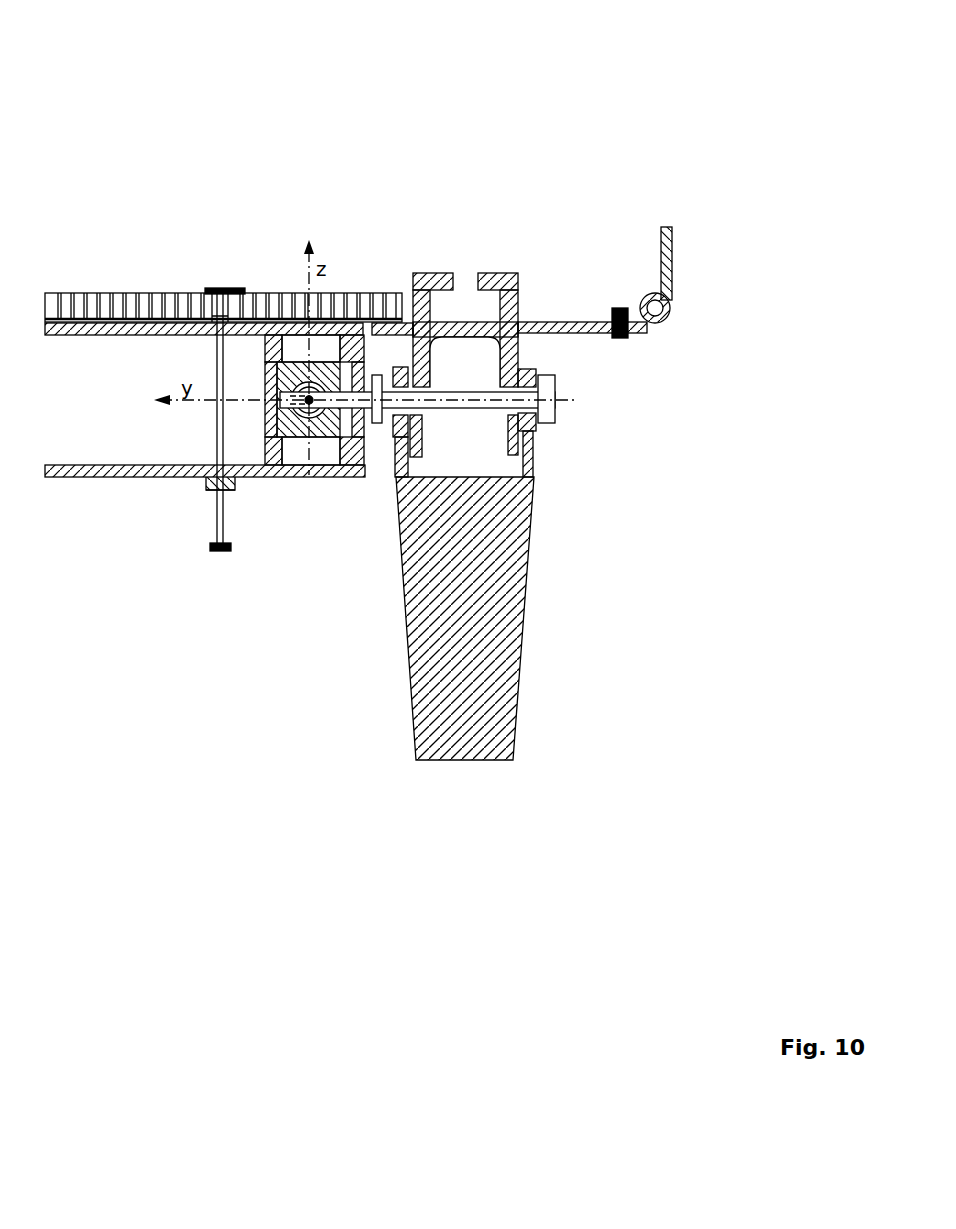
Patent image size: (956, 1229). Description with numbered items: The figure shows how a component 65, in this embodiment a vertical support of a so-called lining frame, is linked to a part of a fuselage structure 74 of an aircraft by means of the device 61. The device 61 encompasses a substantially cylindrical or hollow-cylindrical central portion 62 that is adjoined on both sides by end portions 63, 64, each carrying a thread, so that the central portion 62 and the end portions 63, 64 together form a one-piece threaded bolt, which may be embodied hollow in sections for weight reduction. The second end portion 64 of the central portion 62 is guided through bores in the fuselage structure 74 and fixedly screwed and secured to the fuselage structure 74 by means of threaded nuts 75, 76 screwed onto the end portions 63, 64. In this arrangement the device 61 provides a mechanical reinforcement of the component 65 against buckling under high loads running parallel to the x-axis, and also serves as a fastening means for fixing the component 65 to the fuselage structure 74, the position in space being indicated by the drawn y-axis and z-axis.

The device 61 is at (462, 88).
The central portion 62 is at (431, 422).
The end portion 63 is at (572, 412).
The end portion 64 is at (350, 380).
The component 65 is at (366, 322).
The fuselage structure 74 is at (504, 295).
The threaded nut 75 is at (378, 378).
The threaded nut 76 is at (555, 382).